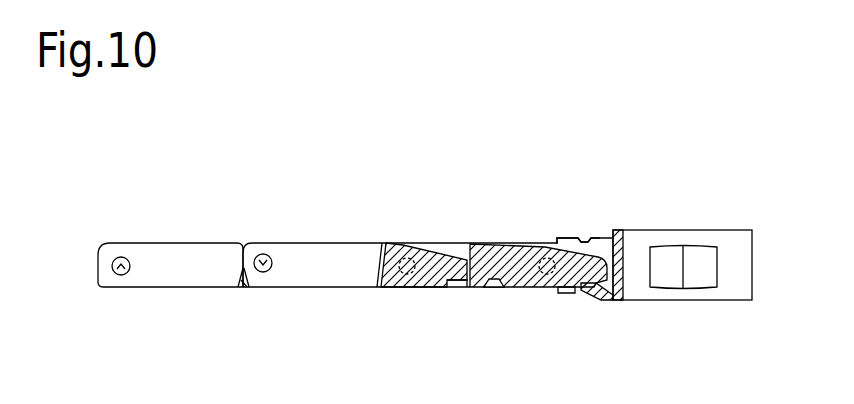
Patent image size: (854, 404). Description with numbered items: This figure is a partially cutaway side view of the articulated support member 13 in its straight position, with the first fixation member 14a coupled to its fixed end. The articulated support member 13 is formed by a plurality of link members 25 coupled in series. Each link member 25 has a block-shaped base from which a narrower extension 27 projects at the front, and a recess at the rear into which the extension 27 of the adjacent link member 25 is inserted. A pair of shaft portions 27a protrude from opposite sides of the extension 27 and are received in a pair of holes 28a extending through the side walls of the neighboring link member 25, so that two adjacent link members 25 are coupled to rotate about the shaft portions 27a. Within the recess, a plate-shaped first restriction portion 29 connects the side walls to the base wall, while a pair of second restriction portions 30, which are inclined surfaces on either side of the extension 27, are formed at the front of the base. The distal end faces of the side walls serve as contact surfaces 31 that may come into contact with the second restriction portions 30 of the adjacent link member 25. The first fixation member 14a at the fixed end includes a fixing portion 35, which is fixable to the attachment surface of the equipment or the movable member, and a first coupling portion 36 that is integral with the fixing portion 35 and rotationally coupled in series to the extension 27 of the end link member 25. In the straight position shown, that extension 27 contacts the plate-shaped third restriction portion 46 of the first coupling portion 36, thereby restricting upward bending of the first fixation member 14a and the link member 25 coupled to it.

The articulated support member 13 is at (137, 243).
The link member 25 is at (178, 243).
The extension 27 is at (447, 248).
The shaft portion 27a is at (268, 272).
The hole 28a is at (265, 254).
The first restriction portion 29 is at (455, 288).
The second restriction portion 30 is at (247, 288).
The contact surface 31 is at (240, 268).
The fixing portion 35 is at (673, 230).
The first coupling portion 36 is at (591, 238).
The third restriction portion 46 is at (600, 292).
The first fixation member 14a is at (733, 230).